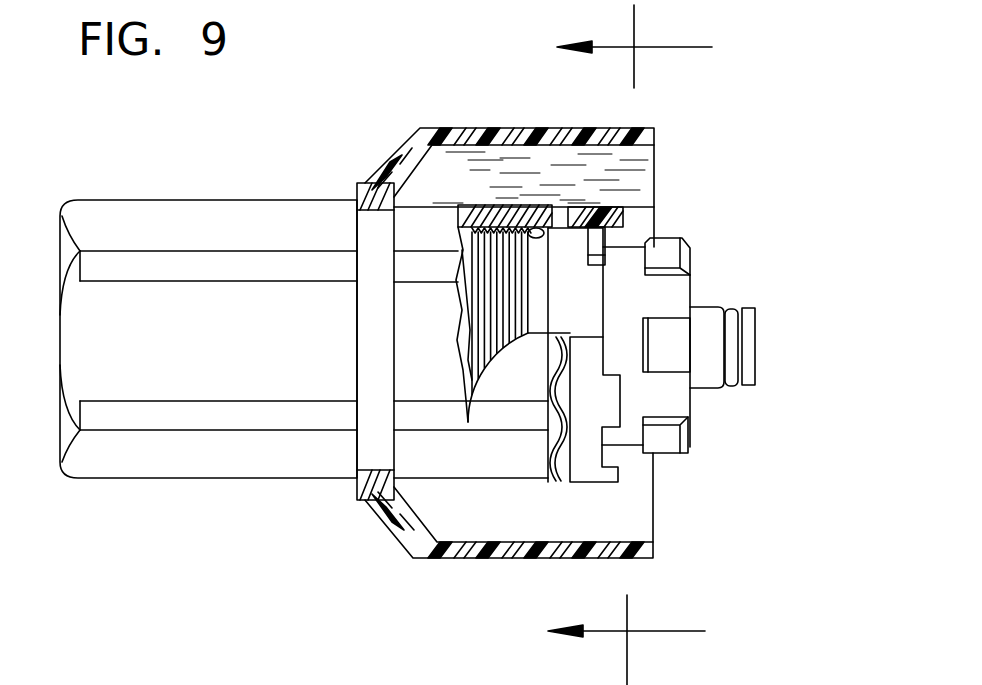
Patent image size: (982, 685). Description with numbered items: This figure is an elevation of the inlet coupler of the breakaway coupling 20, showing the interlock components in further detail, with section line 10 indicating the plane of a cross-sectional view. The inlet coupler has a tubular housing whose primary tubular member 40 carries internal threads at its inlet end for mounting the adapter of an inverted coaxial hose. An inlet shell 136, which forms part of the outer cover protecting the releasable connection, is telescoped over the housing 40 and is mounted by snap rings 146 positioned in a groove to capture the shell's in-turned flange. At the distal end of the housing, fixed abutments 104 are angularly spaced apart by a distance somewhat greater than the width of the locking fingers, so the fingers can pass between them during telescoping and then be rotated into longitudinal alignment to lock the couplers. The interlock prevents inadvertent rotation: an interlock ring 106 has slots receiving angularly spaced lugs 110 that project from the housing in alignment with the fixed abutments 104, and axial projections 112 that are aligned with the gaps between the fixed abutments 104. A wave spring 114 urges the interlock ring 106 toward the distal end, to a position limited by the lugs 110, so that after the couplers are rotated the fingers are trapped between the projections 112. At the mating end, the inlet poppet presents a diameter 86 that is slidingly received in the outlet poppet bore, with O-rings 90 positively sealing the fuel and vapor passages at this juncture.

The section line 10 is at (630, 345).
The breakaway coupling 20 is at (274, 158).
The primary tubular member 40 is at (211, 200).
The snap ring 146 is at (367, 182).
The inlet shell 136 is at (488, 128).
The lugs 110 is at (598, 236).
The interlock ring 106 is at (597, 483).
The axial projections 112 is at (620, 208).
The fixed abutments 104 is at (668, 248).
The O-rings 90 is at (730, 306).
The diameter 86 is at (758, 327).
The wave spring 114 is at (550, 443).